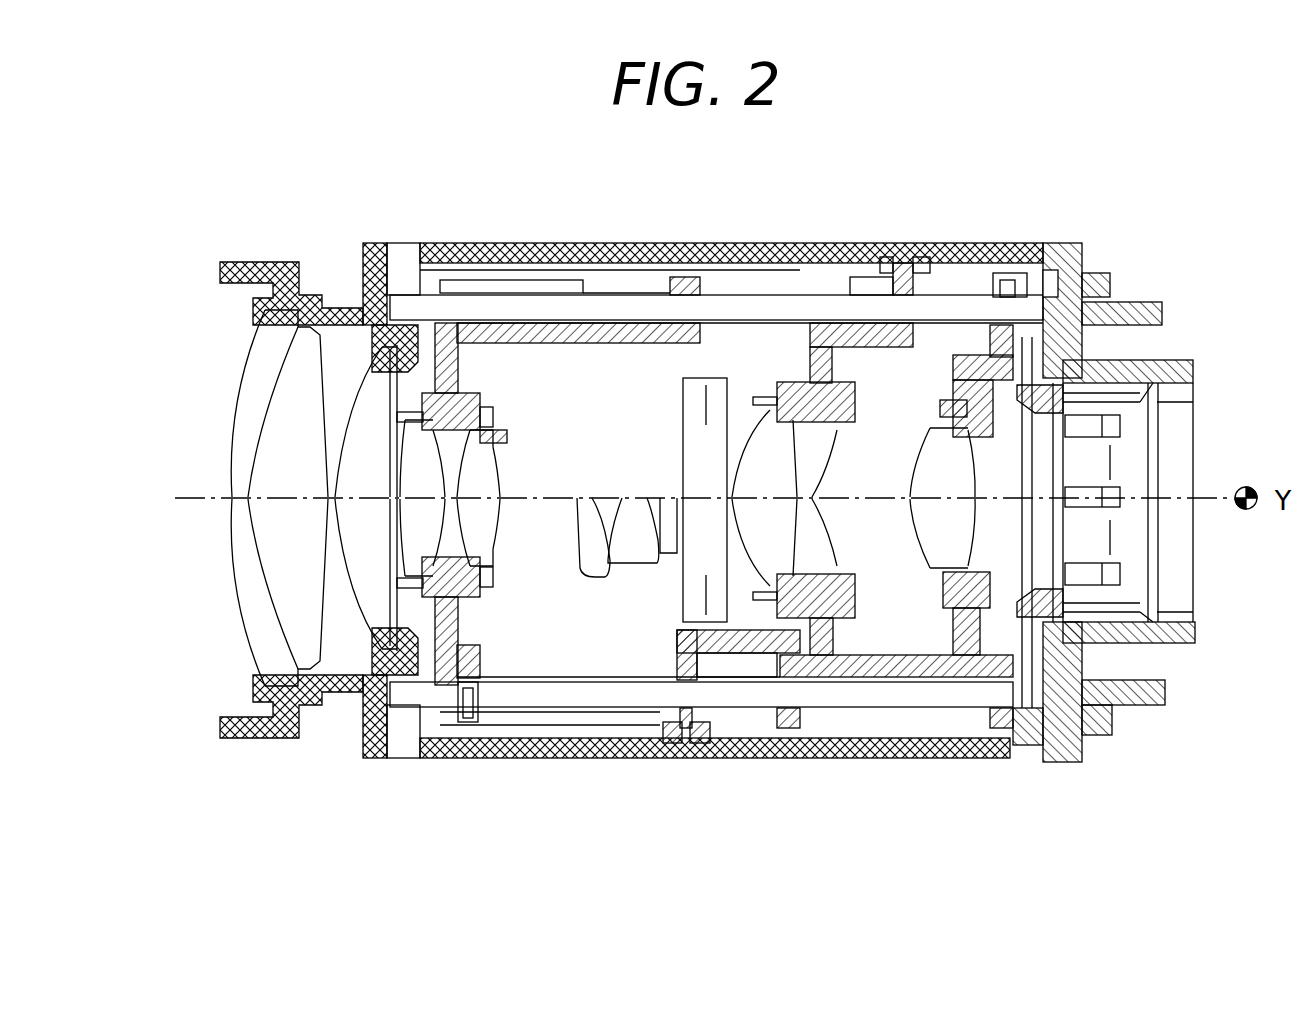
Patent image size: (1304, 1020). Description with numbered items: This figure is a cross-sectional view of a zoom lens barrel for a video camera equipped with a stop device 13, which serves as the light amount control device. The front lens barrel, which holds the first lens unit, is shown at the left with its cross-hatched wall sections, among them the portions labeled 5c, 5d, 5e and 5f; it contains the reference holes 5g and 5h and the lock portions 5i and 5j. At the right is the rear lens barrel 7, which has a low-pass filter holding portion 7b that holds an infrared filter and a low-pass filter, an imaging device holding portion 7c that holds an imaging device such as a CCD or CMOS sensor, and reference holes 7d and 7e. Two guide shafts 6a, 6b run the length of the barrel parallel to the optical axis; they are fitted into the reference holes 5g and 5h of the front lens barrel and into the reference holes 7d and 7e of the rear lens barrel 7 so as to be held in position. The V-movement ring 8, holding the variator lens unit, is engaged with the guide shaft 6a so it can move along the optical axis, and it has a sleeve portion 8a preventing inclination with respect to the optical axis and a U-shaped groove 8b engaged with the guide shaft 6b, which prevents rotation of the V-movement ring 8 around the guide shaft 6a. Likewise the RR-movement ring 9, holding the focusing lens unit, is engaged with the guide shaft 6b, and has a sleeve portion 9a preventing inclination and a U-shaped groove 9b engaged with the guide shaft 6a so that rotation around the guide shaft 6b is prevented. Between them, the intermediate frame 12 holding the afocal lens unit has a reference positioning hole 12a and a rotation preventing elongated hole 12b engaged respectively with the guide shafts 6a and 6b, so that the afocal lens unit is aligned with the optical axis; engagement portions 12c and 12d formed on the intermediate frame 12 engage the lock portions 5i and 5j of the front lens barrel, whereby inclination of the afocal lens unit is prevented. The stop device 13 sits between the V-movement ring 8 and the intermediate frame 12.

The fixed barrel rear cylindrical portion 5c is at (405, 760).
The fixed barrel front flange step 5d is at (398, 262).
The fixed barrel lower step 5e is at (441, 758).
The fixed barrel outer cylindrical wall 5f is at (430, 272).
The reference hole 5g is at (362, 745).
The reference hole 5h is at (353, 297).
The lock portion 5i is at (886, 257).
The lock portion 5j is at (660, 743).
The guide shaft 6a is at (580, 305).
The guide shaft 6b is at (588, 707).
The rear lens barrel 7 is at (1062, 762).
The low-pass filter holding portion 7b is at (1010, 757).
The imaging device holding portion 7c is at (1140, 418).
The reference hole 7d is at (1110, 752).
The reference hole 7e is at (1112, 284).
The V-movement ring 8 is at (484, 327).
The sleeve portion 8a is at (683, 283).
The U-shaped groove 8b is at (493, 740).
The RR-movement ring 9 is at (930, 757).
The sleeve portion 9a is at (847, 756).
The U-shaped groove 9b is at (1017, 273).
The intermediate frame 12 is at (797, 383).
The reference positioning hole 12a is at (893, 276).
The rotation preventing elongated hole 12b is at (747, 755).
The engagement portion 12c is at (915, 250).
The engagement portion 12d is at (695, 755).
The stop device 13 is at (682, 412).